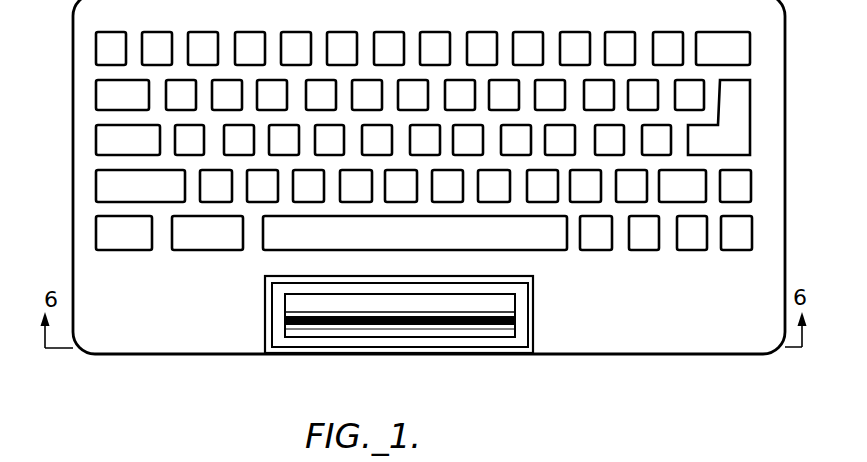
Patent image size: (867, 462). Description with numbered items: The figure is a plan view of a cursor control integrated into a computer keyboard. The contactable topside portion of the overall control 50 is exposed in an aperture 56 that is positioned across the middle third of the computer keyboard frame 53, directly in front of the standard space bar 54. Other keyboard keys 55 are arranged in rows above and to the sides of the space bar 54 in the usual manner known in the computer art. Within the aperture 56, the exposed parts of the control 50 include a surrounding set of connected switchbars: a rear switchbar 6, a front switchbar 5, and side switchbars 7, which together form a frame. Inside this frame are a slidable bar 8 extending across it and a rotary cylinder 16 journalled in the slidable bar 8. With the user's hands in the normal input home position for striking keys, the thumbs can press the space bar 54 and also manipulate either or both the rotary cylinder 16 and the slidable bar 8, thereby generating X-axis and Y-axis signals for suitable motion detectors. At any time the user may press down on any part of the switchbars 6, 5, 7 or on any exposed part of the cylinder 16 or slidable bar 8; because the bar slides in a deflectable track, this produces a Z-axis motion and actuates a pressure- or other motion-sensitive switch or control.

The control 50 is at (236, 334).
The computer keyboard frame 53 is at (657, 306).
The space bar 54 is at (276, 236).
The keyboard keys 55 is at (123, 236).
The aperture 56 is at (533, 280).
The side switchbars 7 is at (266, 340).
The rear switchbar 6 is at (500, 288).
The slidable bar 8 is at (412, 332).
The front switchbar 5 is at (443, 338).
The rotary cylinder 16 is at (482, 323).